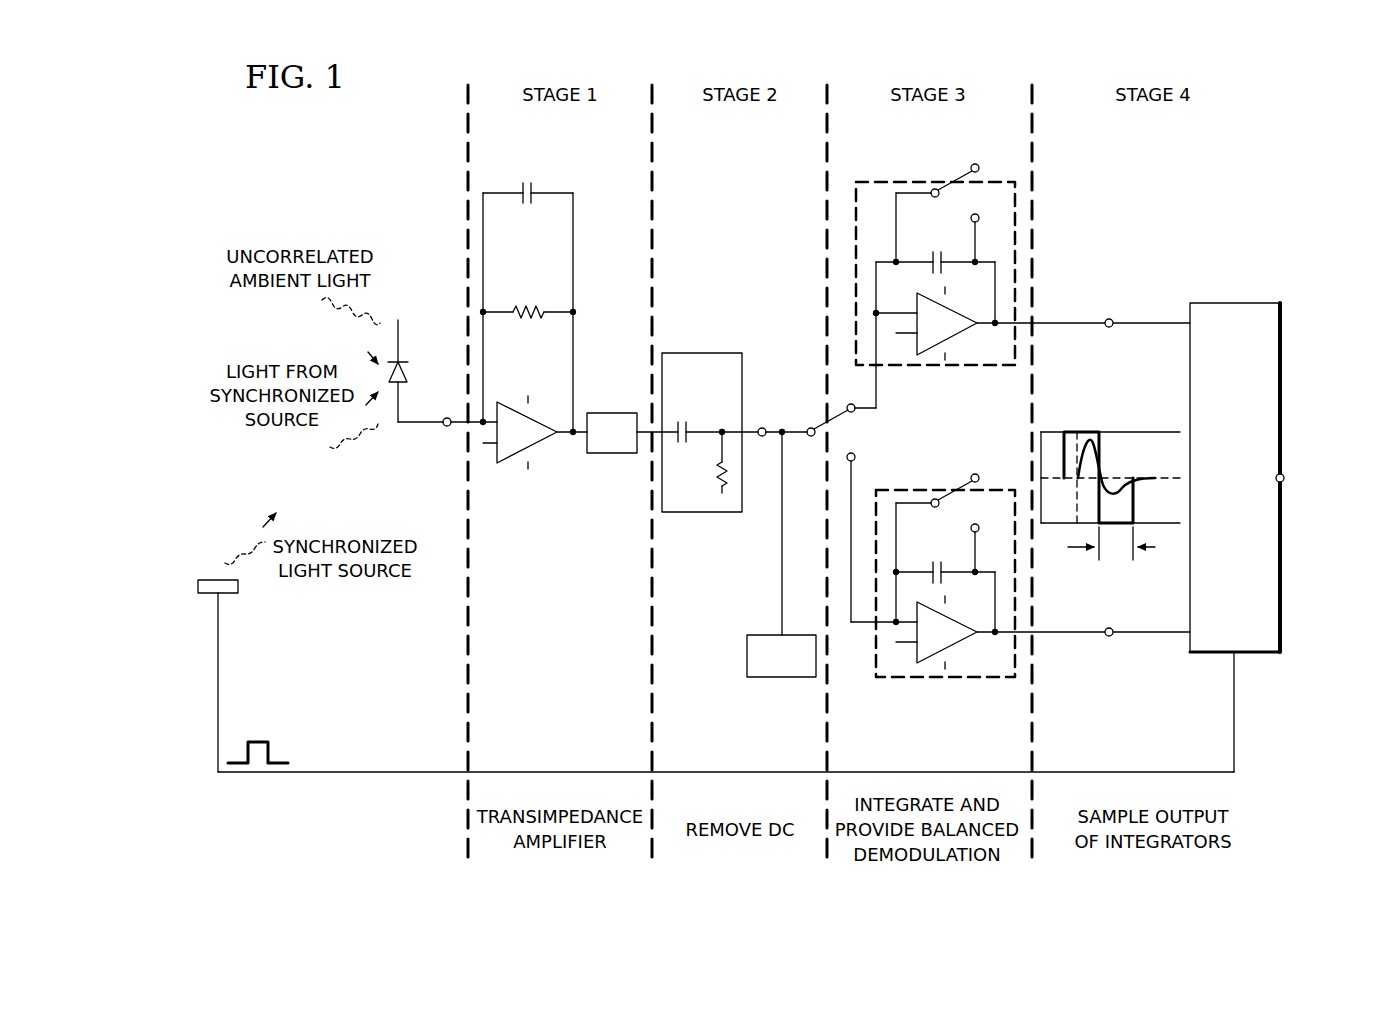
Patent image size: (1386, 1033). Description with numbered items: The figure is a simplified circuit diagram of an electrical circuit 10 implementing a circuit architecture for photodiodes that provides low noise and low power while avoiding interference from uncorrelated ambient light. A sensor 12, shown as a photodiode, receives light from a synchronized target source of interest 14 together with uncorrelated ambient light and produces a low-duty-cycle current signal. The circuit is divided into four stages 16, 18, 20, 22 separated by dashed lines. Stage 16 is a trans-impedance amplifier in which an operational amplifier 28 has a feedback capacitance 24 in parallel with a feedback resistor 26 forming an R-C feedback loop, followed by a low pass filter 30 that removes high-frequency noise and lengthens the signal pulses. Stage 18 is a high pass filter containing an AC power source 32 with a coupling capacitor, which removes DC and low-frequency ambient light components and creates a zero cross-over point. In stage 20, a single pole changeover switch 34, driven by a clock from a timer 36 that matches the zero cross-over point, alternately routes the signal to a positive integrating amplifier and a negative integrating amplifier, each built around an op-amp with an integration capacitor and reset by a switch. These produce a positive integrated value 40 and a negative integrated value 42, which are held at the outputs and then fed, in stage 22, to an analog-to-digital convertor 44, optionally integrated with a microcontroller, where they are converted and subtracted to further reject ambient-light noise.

The electrical circuit 10 is at (291, 182).
The sensor 12 is at (412, 372).
The target source of interest 14 is at (208, 596).
The stage 16 is at (590, 195).
The stage 18 is at (737, 225).
The stage 20 is at (886, 165).
The stage 22 is at (1200, 217).
The feedback capacitance 24 is at (527, 205).
The feedback resistor 26 is at (527, 320).
The operational amplifier 28 is at (540, 450).
The low pass filter 30 is at (610, 456).
The AC power source 32 is at (700, 515).
The single pole changeover switch 34 is at (810, 427).
The timer 36 is at (772, 680).
The positive integrated value 40 is at (1112, 328).
The negative integrated value 42 is at (1112, 637).
The analog-to-digital convertor 44 is at (1237, 477).